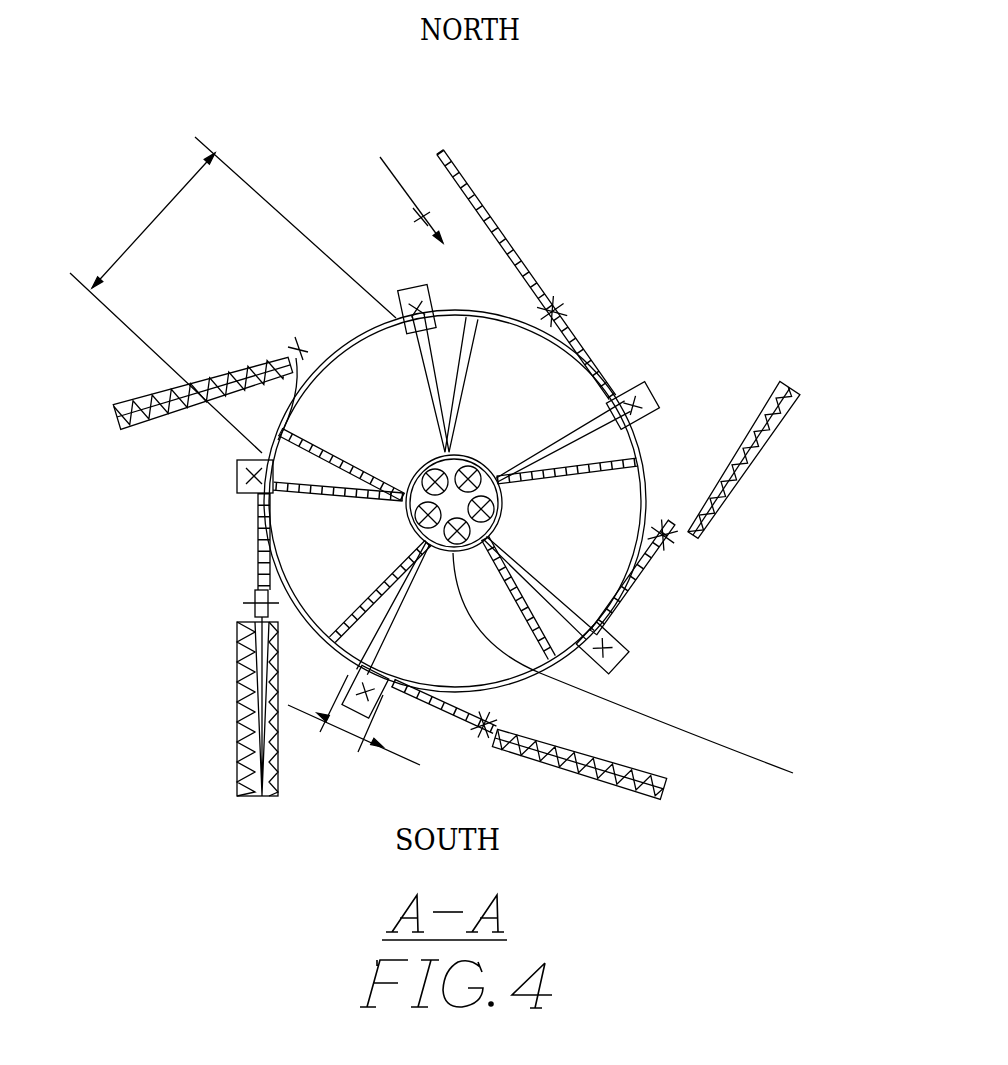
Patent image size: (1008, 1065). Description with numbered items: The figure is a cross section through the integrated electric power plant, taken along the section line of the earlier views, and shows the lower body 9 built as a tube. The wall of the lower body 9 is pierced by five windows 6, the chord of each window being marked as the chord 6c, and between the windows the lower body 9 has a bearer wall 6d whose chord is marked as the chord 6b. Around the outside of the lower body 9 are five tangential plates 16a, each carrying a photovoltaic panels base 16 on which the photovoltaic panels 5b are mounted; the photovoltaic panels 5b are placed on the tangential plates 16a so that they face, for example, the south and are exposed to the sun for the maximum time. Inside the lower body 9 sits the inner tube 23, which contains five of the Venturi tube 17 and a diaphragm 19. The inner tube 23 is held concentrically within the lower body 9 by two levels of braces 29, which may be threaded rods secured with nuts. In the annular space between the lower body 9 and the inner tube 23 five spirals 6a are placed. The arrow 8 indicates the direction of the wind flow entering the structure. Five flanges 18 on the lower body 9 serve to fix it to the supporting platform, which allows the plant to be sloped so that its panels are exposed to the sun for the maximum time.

The photovoltaic panels 5b is at (597, 775).
The windows 6 is at (293, 340).
The spirals 6a is at (365, 603).
The chord of the bearer wall 6b is at (352, 712).
The chord of the window 6c is at (233, 295).
The bearer wall 6d is at (383, 695).
The arrow 8 is at (397, 185).
The lower body 9 is at (643, 487).
The photovoltaic panels base 16 is at (457, 170).
The tangential plates 16a is at (568, 333).
The Venturi tube 17 is at (607, 603).
The flanges 18 is at (615, 660).
The diaphragm 19 is at (654, 678).
The inner tube 23 is at (665, 540).
The braces 29 is at (337, 497).